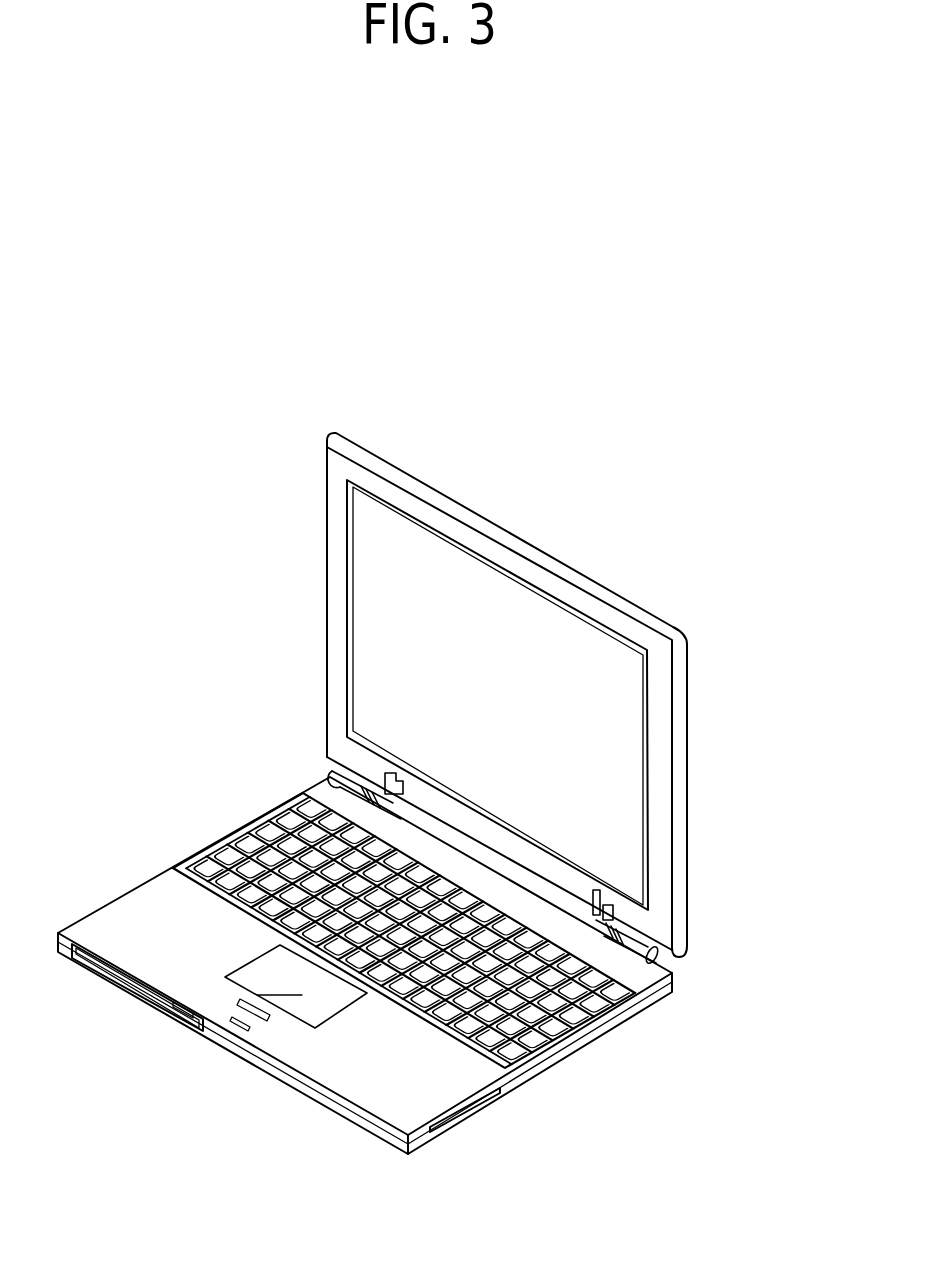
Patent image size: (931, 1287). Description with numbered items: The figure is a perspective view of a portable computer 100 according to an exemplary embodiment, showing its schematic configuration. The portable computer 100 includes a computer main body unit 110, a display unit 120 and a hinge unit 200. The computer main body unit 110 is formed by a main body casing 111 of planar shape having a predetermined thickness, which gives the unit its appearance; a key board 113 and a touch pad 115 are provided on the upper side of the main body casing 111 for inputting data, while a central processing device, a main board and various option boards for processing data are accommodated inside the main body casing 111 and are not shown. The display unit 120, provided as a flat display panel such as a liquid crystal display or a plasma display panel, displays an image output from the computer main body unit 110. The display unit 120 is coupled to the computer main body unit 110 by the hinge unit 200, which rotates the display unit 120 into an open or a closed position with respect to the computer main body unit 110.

The portable computer 100 is at (568, 408).
The computer main body unit 110 is at (651, 1128).
The main body casing 111 is at (493, 1087).
The key board 113 is at (552, 1019).
The touch pad 115 is at (318, 997).
The display unit 120 is at (680, 775).
The hinge unit 200 is at (649, 942).